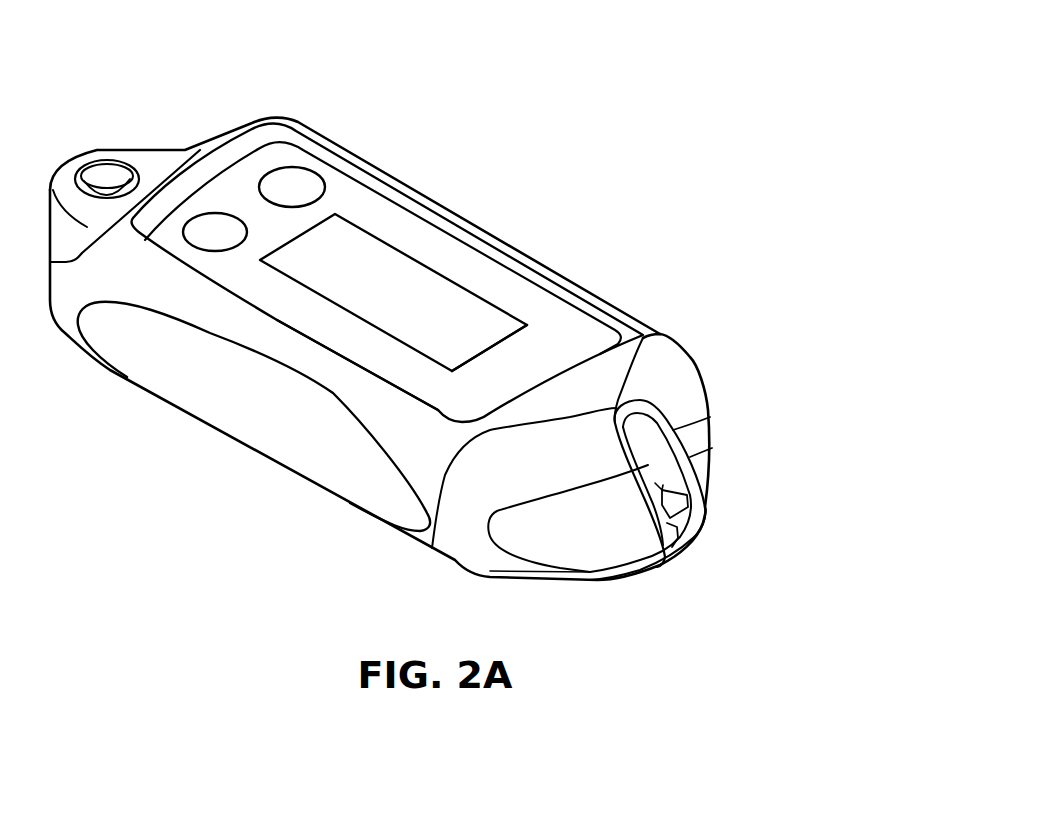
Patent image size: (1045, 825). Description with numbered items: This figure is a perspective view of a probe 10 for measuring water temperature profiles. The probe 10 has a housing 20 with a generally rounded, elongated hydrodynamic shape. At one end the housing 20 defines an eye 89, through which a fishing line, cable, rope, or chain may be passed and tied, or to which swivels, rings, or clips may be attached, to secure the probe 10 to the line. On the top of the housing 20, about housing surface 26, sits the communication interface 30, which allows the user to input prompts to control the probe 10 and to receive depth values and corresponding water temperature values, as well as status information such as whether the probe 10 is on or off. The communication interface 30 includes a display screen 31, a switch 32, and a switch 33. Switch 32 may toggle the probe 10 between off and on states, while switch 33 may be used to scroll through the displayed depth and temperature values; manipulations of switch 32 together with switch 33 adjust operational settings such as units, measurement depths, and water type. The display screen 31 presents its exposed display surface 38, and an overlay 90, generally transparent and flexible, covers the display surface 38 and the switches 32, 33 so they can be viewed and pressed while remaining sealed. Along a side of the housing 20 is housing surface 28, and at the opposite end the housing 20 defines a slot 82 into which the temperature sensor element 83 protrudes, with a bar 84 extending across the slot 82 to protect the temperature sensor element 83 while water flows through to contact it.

The probe 10 is at (598, 87).
The housing 20 is at (677, 363).
The housing surface 26 is at (280, 125).
The housing surface 28 is at (110, 367).
The communication interface 30 is at (368, 207).
The display screen 31 is at (413, 285).
The switch 32 is at (212, 235).
The switch 33 is at (300, 185).
The display surface 38 is at (490, 323).
The slot 82 is at (705, 523).
The temperature sensor element 83 is at (672, 548).
The bar 84 is at (688, 500).
The eye 89 is at (103, 180).
The overlay 90 is at (400, 362).